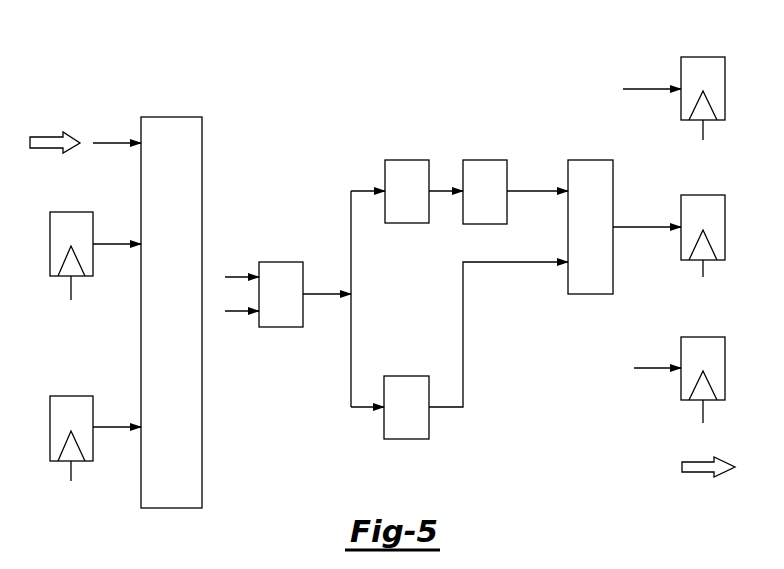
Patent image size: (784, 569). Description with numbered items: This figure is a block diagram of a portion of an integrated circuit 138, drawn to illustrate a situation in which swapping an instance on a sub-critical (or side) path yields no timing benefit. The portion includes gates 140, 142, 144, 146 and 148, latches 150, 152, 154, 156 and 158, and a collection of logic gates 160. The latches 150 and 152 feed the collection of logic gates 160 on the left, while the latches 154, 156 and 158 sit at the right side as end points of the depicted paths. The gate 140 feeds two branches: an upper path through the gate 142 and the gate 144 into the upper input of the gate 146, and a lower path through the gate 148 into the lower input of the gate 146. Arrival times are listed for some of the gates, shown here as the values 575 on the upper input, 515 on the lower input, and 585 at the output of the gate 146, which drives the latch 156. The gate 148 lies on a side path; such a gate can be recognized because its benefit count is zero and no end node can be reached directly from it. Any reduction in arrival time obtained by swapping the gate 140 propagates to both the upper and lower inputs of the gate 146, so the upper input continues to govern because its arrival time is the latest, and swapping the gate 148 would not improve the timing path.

The portion of an integrated circuit 138 is at (485, 94).
The gate 140 is at (280, 262).
The gate 142 is at (404, 160).
The gate 144 is at (482, 160).
The gate 146 is at (588, 160).
The gate 148 is at (404, 376).
The latch 150 is at (71, 212).
The latch 152 is at (71, 396).
The latch 154 is at (704, 57).
The latch 156 is at (704, 195).
The latch 158 is at (704, 337).
The collection of logic gates 160 is at (172, 117).
The first offset signal 575 is at (536, 177).
The second offset signal 515 is at (536, 249).
The combined output signal 585 is at (640, 211).